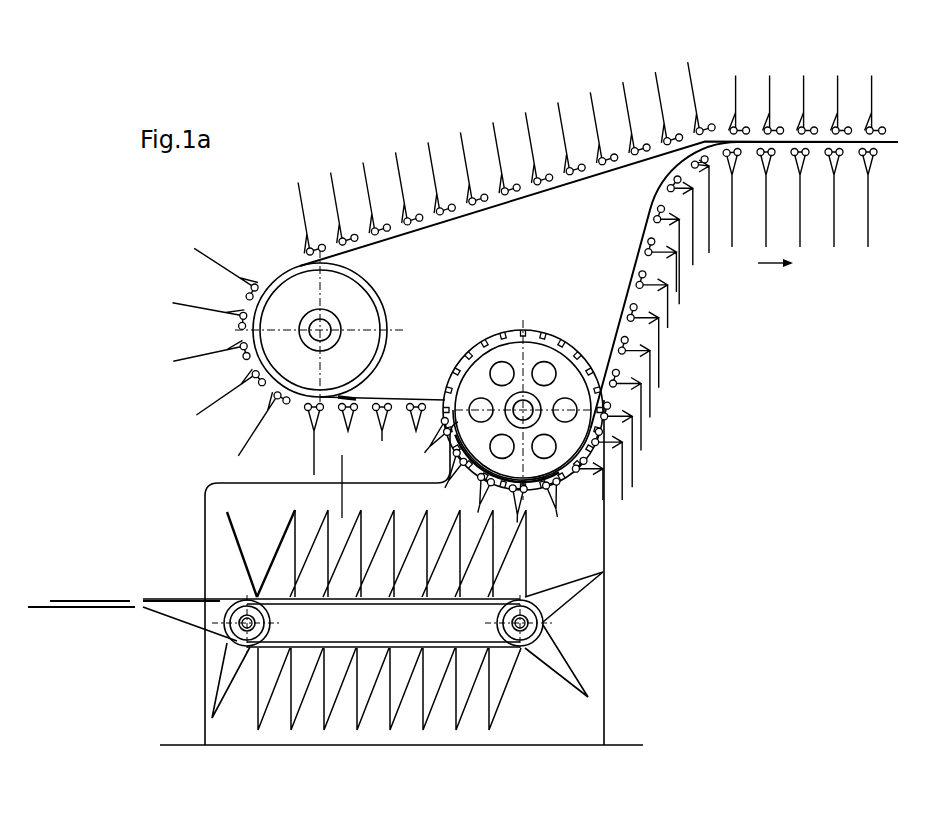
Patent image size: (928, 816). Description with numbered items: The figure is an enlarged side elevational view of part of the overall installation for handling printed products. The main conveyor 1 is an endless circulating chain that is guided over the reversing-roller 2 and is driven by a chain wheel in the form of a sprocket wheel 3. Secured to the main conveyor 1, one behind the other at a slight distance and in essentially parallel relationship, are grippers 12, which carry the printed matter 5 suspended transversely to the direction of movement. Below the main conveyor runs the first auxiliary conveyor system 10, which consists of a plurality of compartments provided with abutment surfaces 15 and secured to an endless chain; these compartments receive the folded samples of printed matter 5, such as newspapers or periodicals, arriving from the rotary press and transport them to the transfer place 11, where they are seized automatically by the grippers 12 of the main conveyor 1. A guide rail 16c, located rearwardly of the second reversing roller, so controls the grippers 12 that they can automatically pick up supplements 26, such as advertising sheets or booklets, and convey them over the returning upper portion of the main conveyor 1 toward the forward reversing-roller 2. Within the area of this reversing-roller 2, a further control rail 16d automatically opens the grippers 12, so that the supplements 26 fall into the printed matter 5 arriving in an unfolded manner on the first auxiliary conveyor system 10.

The conveyor of the main conveyor system 1 is at (589, 172).
The reversing-roller 2 is at (363, 303).
The sprocket wheel 3 is at (553, 353).
The printed matter 5 is at (283, 532).
The first auxiliary conveyor system 10 is at (379, 639).
The transfer place 11 is at (560, 500).
The grippers 12 is at (355, 427).
The abutment surfaces 15 is at (224, 706).
The guide rail 16c is at (490, 474).
The control rail 16d is at (356, 398).
The supplements 26 is at (367, 172).